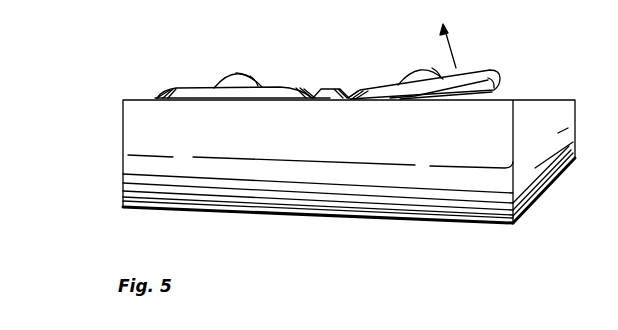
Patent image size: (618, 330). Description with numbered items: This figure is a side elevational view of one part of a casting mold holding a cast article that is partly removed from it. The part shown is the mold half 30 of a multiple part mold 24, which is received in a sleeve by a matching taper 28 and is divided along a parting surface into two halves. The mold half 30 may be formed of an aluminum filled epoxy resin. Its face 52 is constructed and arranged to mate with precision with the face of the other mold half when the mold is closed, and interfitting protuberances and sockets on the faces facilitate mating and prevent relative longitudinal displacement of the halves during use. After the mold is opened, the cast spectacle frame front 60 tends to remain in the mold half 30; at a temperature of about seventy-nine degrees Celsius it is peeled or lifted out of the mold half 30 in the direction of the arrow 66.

The multiple part mold 24 is at (122, 158).
The matching taper 28 is at (417, 222).
The mold half 30 is at (300, 207).
The face 52 is at (138, 100).
The spectacle frame front 60 is at (377, 85).
The arrow 66 is at (452, 48).